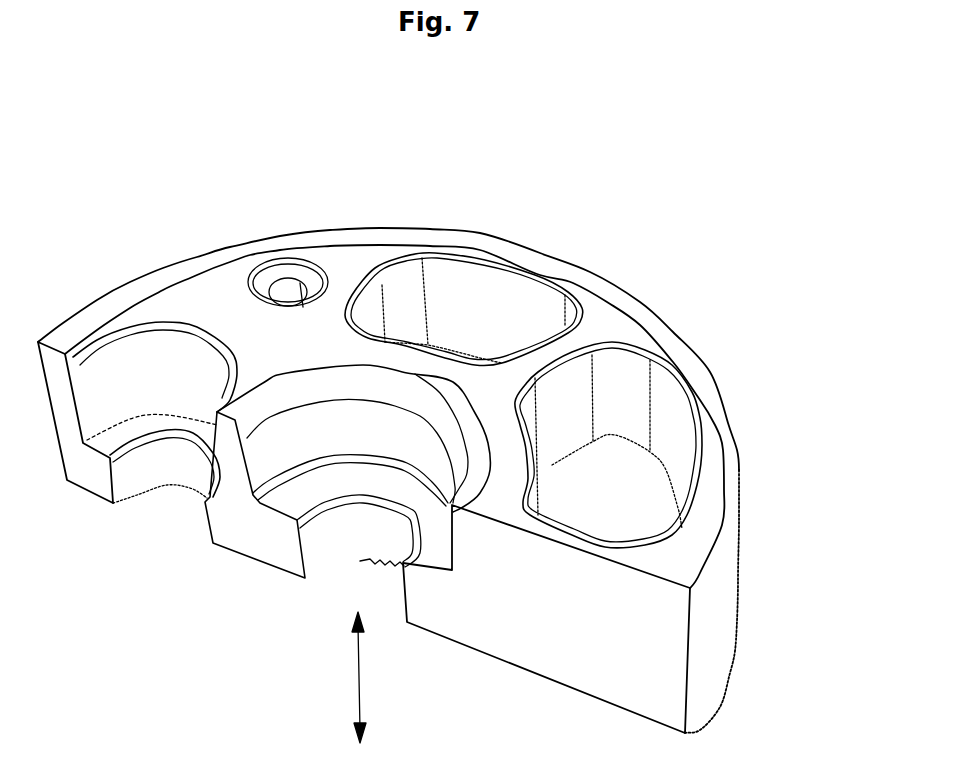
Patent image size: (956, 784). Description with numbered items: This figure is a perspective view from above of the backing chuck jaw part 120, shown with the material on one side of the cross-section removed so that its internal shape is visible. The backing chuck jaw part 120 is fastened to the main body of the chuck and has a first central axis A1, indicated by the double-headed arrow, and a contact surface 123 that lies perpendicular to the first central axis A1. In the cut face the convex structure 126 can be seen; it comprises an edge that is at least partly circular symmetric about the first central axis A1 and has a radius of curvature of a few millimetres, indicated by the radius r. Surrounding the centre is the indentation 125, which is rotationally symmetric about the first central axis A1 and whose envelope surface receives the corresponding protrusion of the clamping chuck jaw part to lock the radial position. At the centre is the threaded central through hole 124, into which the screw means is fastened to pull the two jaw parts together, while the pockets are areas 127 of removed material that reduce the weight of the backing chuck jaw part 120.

The backing chuck jaw part 120 is at (727, 657).
The contact surface 123 is at (605, 323).
The threaded central through hole 124 is at (335, 555).
The indentation 125 is at (272, 445).
The convex structure 126 is at (273, 402).
The areas of removed material 127 is at (675, 442).
The radial direction r is at (452, 505).
The first central axis A1 is at (371, 677).